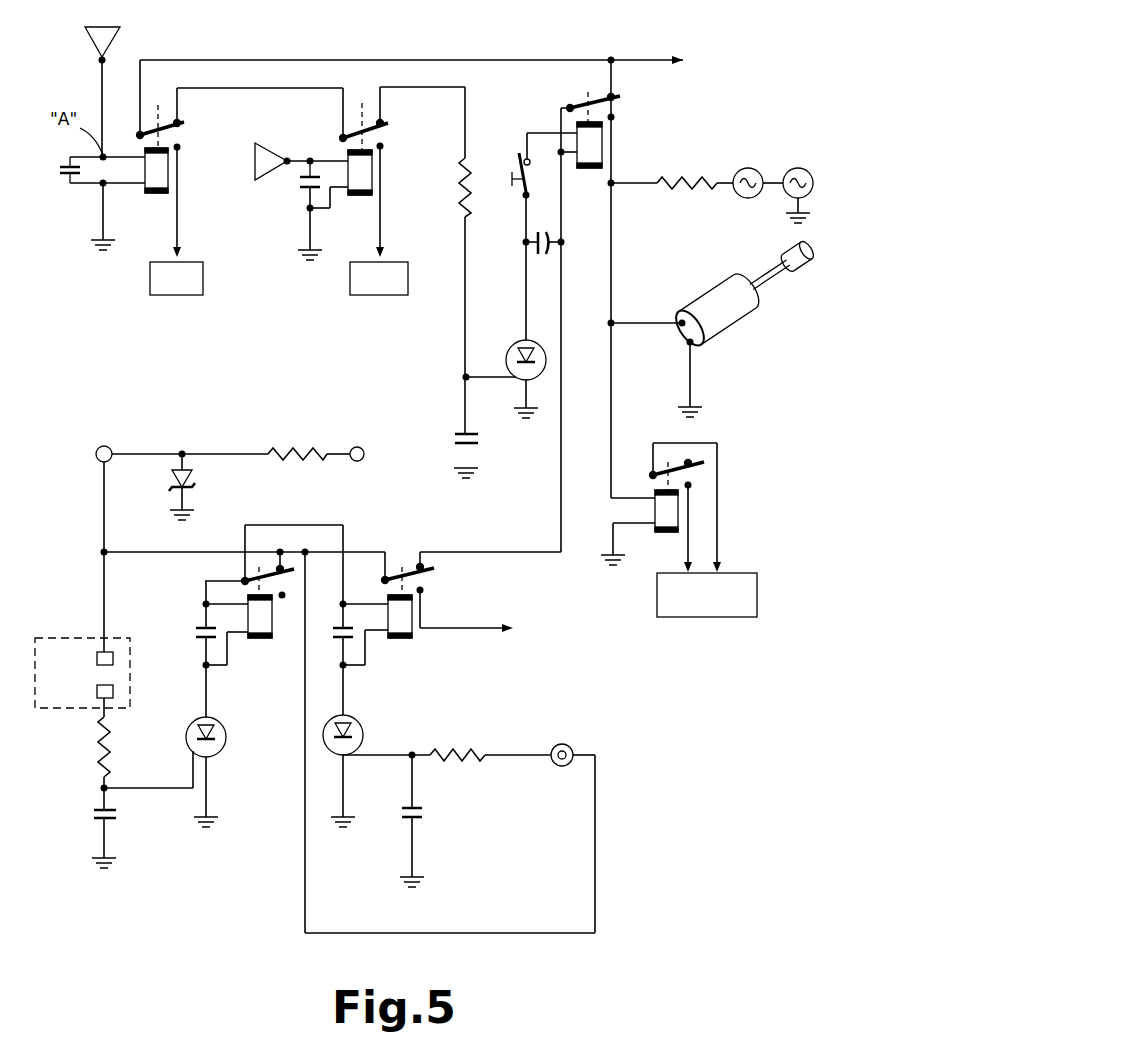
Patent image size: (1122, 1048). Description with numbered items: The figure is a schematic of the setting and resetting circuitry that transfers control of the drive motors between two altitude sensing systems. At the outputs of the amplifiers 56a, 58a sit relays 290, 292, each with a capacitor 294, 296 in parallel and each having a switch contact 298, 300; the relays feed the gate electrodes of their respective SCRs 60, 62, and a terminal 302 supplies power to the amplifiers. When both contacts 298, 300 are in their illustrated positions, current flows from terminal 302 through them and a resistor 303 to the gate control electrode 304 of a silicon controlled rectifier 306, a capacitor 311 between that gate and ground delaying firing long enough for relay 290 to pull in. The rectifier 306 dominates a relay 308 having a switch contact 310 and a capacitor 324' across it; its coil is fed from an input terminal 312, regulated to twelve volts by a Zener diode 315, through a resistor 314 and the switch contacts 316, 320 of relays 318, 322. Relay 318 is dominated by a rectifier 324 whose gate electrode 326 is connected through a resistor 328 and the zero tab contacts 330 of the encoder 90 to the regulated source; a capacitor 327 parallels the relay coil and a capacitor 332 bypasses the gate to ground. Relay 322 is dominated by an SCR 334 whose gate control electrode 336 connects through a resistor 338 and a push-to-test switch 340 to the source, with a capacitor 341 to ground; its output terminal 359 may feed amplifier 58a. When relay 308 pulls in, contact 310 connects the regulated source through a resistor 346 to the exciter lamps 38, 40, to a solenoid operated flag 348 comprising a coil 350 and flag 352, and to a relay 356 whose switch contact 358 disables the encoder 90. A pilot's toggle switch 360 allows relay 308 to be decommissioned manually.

The amplifier 56a is at (87, 33).
The capacitor 294 is at (62, 178).
The relay 290 is at (150, 192).
The switch contact 298 is at (183, 124).
The SCR 60 is at (188, 295).
The amplifier 58a is at (280, 148).
The capacitor 296 is at (305, 190).
The relay 292 is at (360, 193).
The switch contact 300 is at (388, 124).
The resistor 303 is at (457, 193).
The SCR 62 is at (392, 295).
The terminal 302 is at (686, 63).
The switch contact 310 is at (622, 98).
The relay 308 is at (590, 170).
The on-off toggle switch 360 is at (503, 149).
The capacitor 324' is at (570, 260).
The resistor 346 is at (680, 192).
The exciter lamp 38 is at (742, 166).
The exciter lamp 40 is at (804, 166).
The solenoid operated flag 348 is at (686, 292).
The coil 350 is at (733, 320).
The flag 352 is at (812, 273).
The silicon controlled rectifier 306 is at (510, 342).
The gate control electrode 304 is at (495, 380).
The capacitor 311 is at (459, 432).
The resistor 314 is at (297, 447).
The input terminal 312 is at (357, 446).
The Zener diode 315 is at (196, 480).
The switch contact 316 is at (290, 572).
The relay 318 is at (257, 638).
The capacitor 327 is at (197, 633).
The resistor 328 is at (335, 640).
The switch contact 320 is at (433, 568).
The relay 322 is at (400, 638).
The output terminal 359 is at (506, 632).
The zero tab contacts 330 is at (54, 628).
The encoder 90 is at (733, 618).
The rectifier 324 is at (225, 731).
The gate electrode 326 is at (190, 757).
The capacitor 332 is at (112, 820).
The SCR 334 is at (365, 730).
The gate control electrode 336 is at (372, 760).
The resistor 338 is at (470, 752).
The push-to-test switch 340 is at (565, 748).
The capacitor 341 is at (420, 818).
The switch contact 358 is at (702, 466).
The relay 356 is at (668, 536).